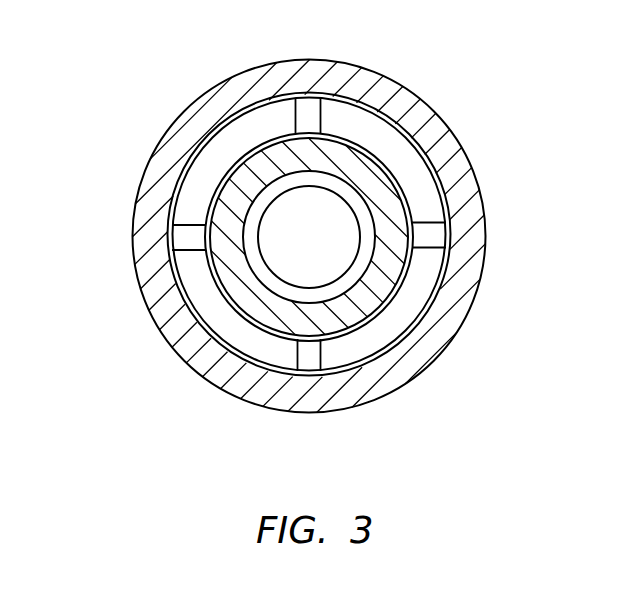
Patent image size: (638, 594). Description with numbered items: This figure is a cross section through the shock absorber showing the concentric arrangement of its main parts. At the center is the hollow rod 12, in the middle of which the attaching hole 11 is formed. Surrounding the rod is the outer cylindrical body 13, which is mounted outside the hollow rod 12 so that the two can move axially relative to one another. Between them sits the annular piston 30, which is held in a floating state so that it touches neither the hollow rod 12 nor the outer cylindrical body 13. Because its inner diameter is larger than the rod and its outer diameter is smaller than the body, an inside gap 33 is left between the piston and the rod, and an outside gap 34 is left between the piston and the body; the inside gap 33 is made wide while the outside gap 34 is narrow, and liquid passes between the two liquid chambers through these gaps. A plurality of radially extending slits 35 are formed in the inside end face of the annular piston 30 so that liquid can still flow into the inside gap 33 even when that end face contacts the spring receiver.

The attaching hole 11 is at (319, 200).
The hollow rod 12 is at (252, 303).
The outer cylindrical body 13 is at (423, 127).
The annular piston 30 is at (417, 178).
The inside gap 33 is at (373, 313).
The outside gap 34 is at (219, 129).
The slits 35 is at (311, 106).